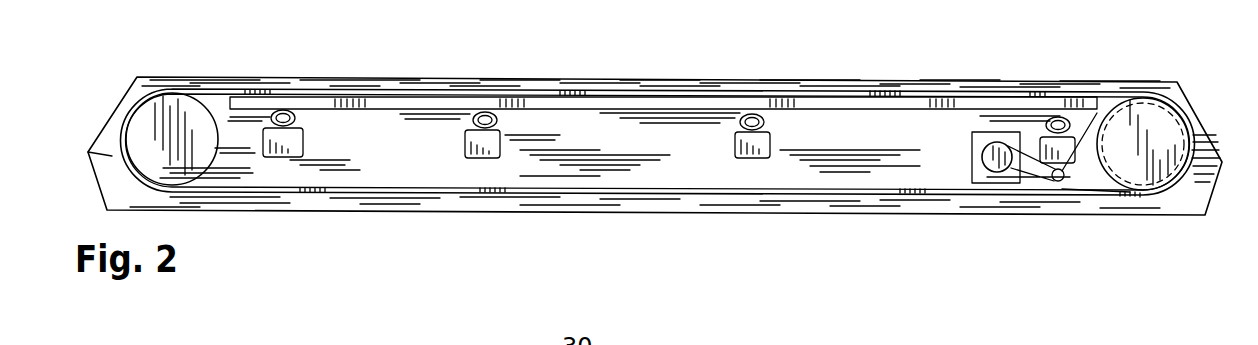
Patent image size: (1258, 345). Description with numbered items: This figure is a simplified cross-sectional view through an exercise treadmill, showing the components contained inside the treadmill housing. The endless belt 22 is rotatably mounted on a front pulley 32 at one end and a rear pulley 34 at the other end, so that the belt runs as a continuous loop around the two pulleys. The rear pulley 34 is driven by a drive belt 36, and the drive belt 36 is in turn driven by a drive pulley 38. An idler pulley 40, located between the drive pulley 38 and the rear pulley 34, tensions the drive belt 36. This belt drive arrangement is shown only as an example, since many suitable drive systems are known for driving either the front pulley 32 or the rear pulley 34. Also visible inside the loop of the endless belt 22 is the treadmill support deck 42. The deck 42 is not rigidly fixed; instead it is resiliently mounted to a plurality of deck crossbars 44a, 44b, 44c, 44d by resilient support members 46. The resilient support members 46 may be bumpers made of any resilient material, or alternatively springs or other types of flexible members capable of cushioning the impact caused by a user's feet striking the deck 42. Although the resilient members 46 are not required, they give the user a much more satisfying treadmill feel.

The endless belt 22 is at (570, 93).
The front pulley 32 is at (183, 108).
The rear pulley 34 is at (1198, 122).
The drive belt 36 is at (1097, 187).
The drive pulley 38 is at (994, 147).
The idler pulley 40 is at (1097, 113).
The treadmill support deck 42 is at (387, 103).
The deck crossbar 44a is at (757, 160).
The deck crossbar 44b is at (492, 158).
The deck crossbar 44c is at (293, 158).
The deck crossbar 44d is at (1040, 165).
The resilient support members 46 is at (298, 112).